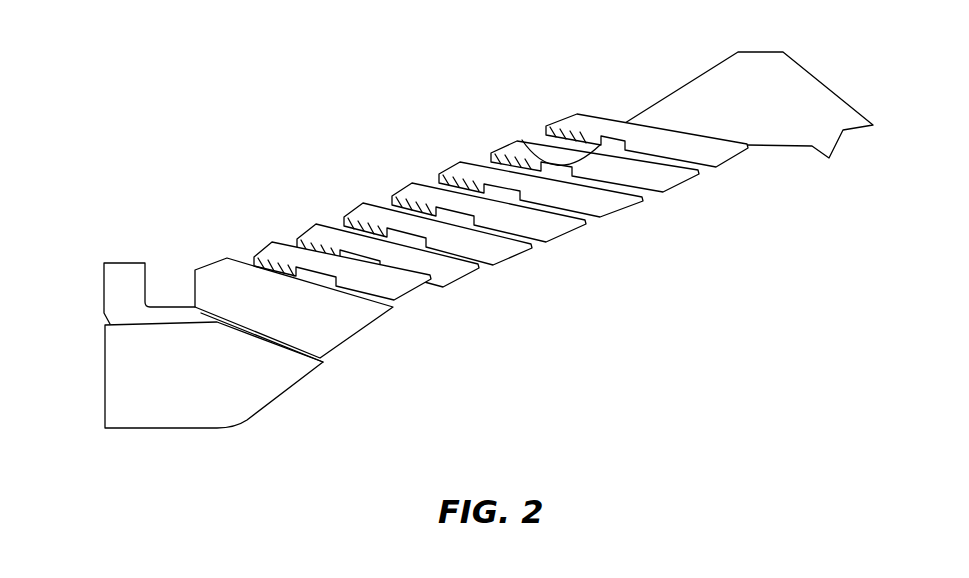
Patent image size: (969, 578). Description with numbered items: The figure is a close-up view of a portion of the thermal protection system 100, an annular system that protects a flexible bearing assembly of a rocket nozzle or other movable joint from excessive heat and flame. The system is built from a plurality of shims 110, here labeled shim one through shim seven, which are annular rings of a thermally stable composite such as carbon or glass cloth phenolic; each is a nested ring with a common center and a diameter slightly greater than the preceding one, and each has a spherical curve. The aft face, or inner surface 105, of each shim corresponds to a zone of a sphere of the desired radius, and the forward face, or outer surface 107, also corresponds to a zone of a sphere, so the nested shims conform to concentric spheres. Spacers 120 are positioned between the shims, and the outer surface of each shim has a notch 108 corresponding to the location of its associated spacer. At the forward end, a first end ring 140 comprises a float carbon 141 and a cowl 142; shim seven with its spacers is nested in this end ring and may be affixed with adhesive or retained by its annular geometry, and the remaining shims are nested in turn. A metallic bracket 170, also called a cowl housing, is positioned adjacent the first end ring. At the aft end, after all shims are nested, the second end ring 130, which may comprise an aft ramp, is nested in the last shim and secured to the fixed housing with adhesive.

The thermal protection system 100 is at (121, 113).
The inner surface 105 is at (600, 117).
The outer surface 107 is at (701, 173).
The notch 108 is at (522, 140).
The shims 110 is at (598, 216).
The spacers 120 is at (438, 182).
The second end ring 130 is at (815, 126).
The first end ring 140 is at (215, 277).
The float carbon 141 is at (340, 313).
The cowl 142 is at (232, 403).
The metallic bracket 170 is at (117, 254).